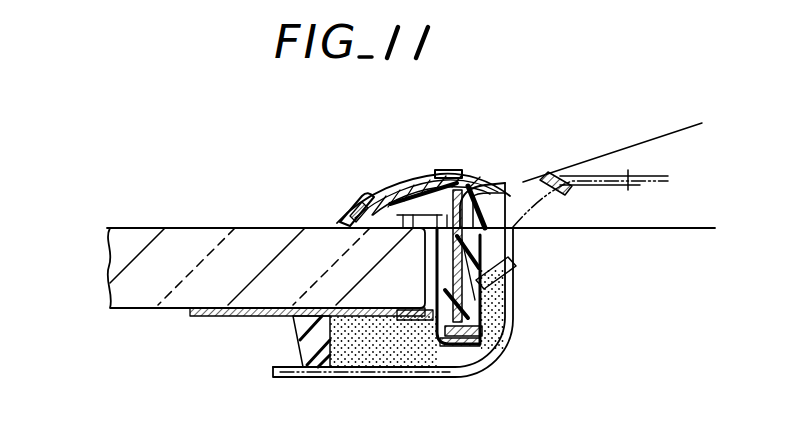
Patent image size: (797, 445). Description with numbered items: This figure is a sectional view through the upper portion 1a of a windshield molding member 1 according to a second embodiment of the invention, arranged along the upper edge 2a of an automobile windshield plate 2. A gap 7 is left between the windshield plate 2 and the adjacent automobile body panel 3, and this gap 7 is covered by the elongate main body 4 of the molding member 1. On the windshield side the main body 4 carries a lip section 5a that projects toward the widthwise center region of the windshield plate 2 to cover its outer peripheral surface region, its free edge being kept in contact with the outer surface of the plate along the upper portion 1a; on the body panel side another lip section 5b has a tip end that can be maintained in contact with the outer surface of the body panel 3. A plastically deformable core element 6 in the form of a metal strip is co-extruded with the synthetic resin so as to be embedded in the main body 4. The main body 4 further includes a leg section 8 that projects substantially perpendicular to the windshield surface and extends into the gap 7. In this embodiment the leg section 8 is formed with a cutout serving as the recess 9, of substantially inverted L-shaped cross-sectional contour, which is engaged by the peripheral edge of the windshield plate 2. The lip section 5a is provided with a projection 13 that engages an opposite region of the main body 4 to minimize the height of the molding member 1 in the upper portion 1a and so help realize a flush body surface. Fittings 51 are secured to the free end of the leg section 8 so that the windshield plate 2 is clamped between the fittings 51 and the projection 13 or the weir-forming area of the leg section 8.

The molding member 1 is at (428, 160).
The upper portion 1a is at (490, 180).
The windshield plate 2 is at (133, 237).
The upper edge 2a is at (218, 228).
The body panel 3 is at (620, 172).
The main body 4 is at (467, 170).
The lip section 5a is at (335, 215).
The lip section 5b is at (540, 170).
The core element 6 is at (395, 183).
The gap 7 is at (505, 248).
The leg section 8 is at (470, 328).
The recess 9 is at (433, 289).
The projection 13 is at (383, 222).
The fitting 51 is at (450, 350).